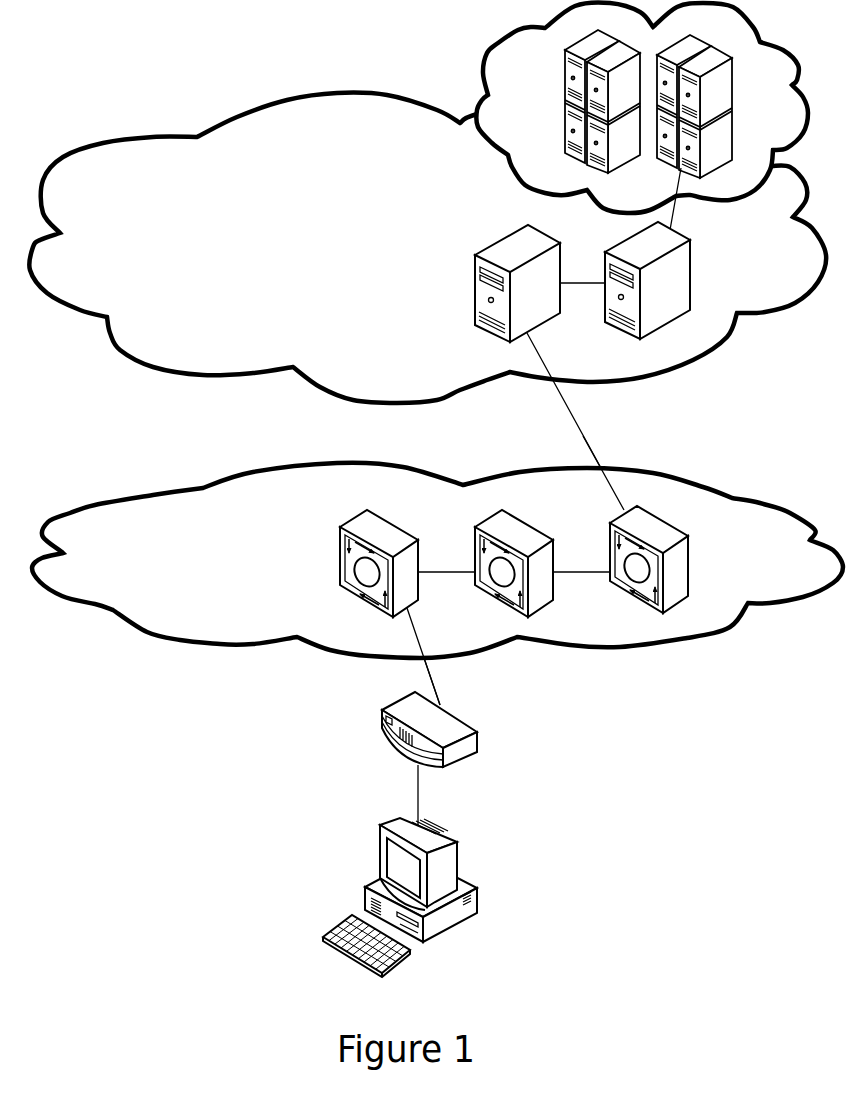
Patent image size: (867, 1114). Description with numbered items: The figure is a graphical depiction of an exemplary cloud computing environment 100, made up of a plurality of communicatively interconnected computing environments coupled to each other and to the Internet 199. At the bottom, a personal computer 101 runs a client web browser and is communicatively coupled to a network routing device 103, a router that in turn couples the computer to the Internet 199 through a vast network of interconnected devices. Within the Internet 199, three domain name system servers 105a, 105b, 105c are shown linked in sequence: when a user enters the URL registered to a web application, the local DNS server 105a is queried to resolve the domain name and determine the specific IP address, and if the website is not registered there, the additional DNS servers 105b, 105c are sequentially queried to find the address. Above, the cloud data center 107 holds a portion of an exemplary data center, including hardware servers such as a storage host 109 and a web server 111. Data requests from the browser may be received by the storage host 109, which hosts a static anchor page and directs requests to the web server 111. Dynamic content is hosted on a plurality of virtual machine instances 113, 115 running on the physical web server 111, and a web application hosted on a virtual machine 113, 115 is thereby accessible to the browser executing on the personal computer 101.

The cloud computing environment 100 is at (436, 489).
The personal computer 101 is at (394, 897).
The network routing device 103 is at (406, 729).
The DNS server 105a is at (336, 565).
The DNS server 105b is at (471, 565).
The DNS server 105c is at (606, 560).
The cloud data center 107 is at (220, 203).
The storage host 109 is at (522, 245).
The web server 111 is at (680, 291).
The virtual machine 113 is at (563, 120).
The virtual machine 115 is at (741, 129).
The Internet 199 is at (232, 561).